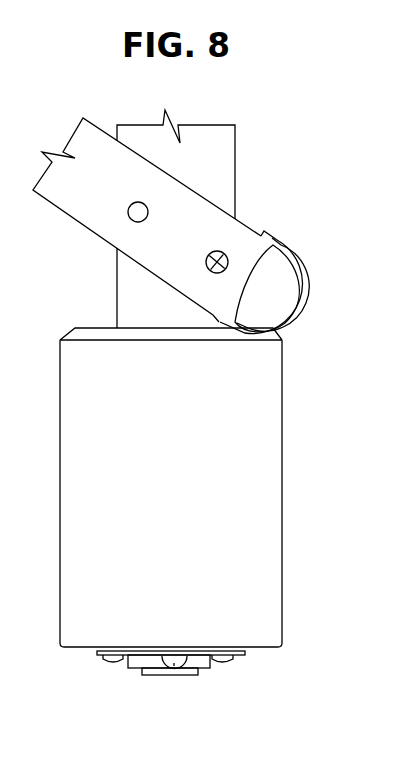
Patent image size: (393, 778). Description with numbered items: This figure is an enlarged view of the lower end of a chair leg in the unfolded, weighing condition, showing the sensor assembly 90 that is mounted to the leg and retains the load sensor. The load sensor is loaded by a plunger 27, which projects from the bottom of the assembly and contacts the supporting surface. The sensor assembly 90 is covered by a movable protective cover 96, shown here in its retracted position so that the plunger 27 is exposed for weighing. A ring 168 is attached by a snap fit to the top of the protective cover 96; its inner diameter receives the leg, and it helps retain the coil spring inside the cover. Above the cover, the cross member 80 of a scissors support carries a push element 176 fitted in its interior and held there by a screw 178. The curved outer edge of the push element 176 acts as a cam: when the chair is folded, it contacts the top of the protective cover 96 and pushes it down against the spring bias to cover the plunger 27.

The sensor assembly 90 is at (195, 421).
The protective cover 96 is at (201, 457).
The ring 168 is at (97, 327).
The cross member 80 is at (248, 236).
The push element 176 is at (313, 288).
The screw 178 is at (205, 262).
The plunger 27 is at (177, 676).